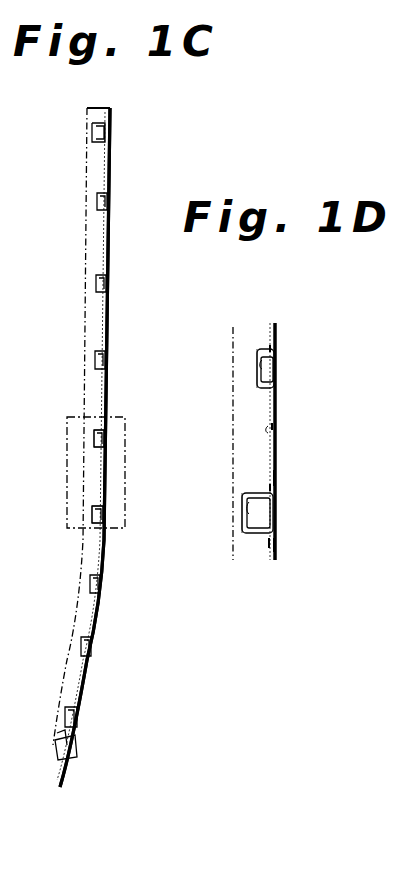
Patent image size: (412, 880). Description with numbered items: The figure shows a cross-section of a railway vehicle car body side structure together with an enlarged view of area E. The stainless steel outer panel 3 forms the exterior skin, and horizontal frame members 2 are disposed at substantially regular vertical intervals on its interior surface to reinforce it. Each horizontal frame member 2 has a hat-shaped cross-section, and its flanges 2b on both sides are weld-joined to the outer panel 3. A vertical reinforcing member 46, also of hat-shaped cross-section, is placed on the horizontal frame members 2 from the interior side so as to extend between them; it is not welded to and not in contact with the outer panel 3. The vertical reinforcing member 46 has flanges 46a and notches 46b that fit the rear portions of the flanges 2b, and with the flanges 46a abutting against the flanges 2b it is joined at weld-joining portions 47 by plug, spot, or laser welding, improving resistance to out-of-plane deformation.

In FIG. 1C, the horizontal frame member 2 is at (100, 283).
In FIG. 1D, the horizontal frame member 2 is at (259, 379).
In FIG. 1D, the flange 2b is at (277, 479).
In FIG. 1C, the outer panel 3 is at (98, 613).
In FIG. 1D, the outer panel 3 is at (277, 451).
In FIG. 1C, the vertical reinforcing member 46 is at (93, 393).
In FIG. 1D, the vertical reinforcing member 46 is at (233, 413).
In FIG. 1D, the flange 46a is at (269, 430).
In FIG. 1C, the notch 46b is at (100, 434).
In FIG. 1D, the notch 46b is at (258, 355).
In FIG. 1D, the weld-joining portion 47 is at (270, 347).
In FIG. 1C, the area E is at (67, 532).